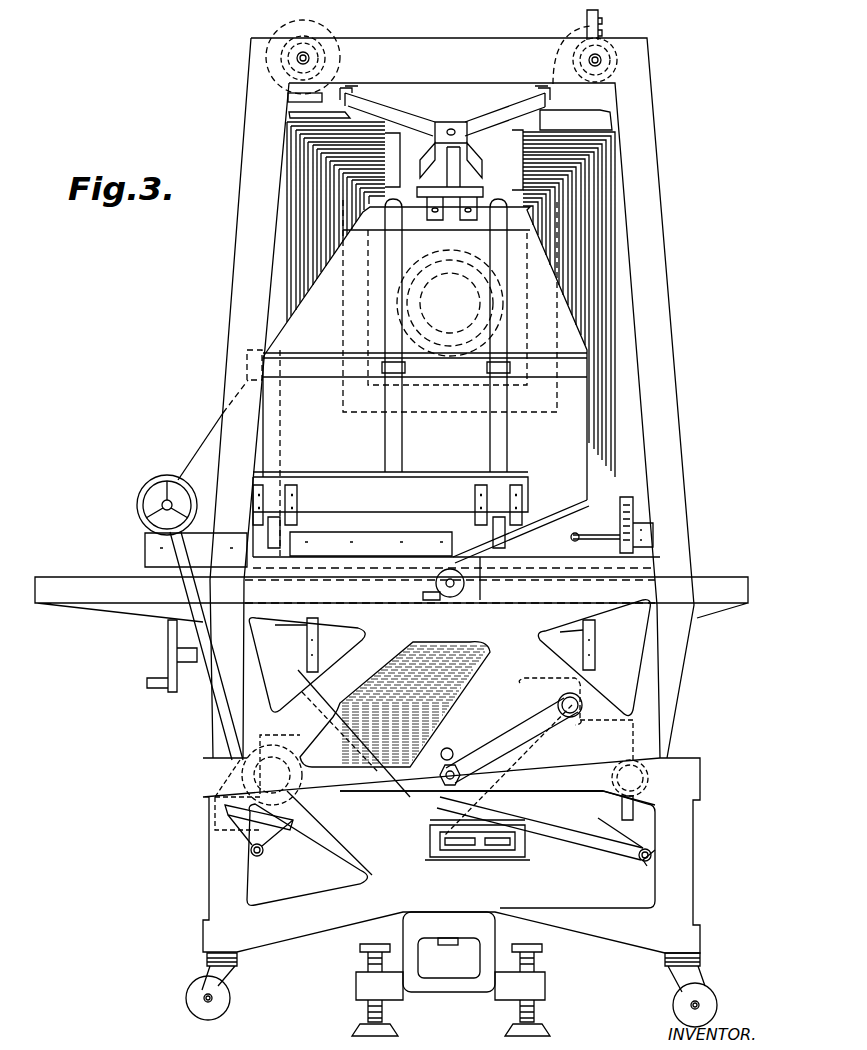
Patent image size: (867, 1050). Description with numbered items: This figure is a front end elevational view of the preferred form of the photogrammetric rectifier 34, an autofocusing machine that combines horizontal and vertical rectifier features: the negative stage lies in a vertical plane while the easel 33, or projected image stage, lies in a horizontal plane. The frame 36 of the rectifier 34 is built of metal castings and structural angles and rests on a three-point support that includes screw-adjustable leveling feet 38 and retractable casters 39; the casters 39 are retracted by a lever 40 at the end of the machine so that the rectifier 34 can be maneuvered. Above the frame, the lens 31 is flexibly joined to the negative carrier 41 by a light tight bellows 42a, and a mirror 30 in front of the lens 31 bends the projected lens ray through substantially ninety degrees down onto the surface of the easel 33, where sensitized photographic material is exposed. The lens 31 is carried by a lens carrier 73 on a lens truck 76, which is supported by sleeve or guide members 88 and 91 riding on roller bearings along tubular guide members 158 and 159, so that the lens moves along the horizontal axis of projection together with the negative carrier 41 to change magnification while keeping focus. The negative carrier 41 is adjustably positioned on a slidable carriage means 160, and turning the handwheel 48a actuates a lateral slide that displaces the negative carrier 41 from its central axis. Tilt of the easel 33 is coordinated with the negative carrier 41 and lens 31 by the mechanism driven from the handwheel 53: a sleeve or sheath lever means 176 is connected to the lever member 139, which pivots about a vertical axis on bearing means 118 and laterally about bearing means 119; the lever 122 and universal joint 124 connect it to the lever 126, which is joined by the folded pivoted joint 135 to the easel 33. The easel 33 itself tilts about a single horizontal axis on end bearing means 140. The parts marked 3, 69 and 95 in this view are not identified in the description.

The machine 3 is at (205, 775).
The mirror 30 is at (535, 315).
The lens 31 is at (460, 325).
The easel 33 is at (108, 590).
The rectifier 34 is at (688, 157).
The frame 36 is at (246, 323).
The feet 38 is at (362, 1025).
The retractable casters 39 is at (214, 1002).
The lever 40 is at (520, 735).
The negative carrier 41 is at (616, 122).
The light tight bellows 42a is at (612, 268).
The handwheel 48a is at (166, 653).
The handwheel 53 is at (140, 507).
The clamp 69 is at (466, 184).
The lens carrier 73 is at (515, 185).
The lens truck 76 is at (312, 118).
The sleeve or guide member 88 is at (578, 27).
The sleeve or guide member 91 is at (286, 36).
The post 95 is at (443, 175).
The bearing means 118 is at (464, 860).
The bearing means 119 is at (279, 848).
The lever 122 is at (492, 817).
The universal joint 124 is at (503, 765).
The lever 126 is at (395, 704).
The pivoted joint 135 is at (302, 620).
The lever member 139 is at (498, 868).
The end bearing means 140 is at (452, 598).
The tubular member 158 is at (606, 45).
The tubular member 159 is at (317, 44).
The slidable carriage means 160 is at (213, 713).
The sleeve or sheath lever means 176 is at (405, 856).